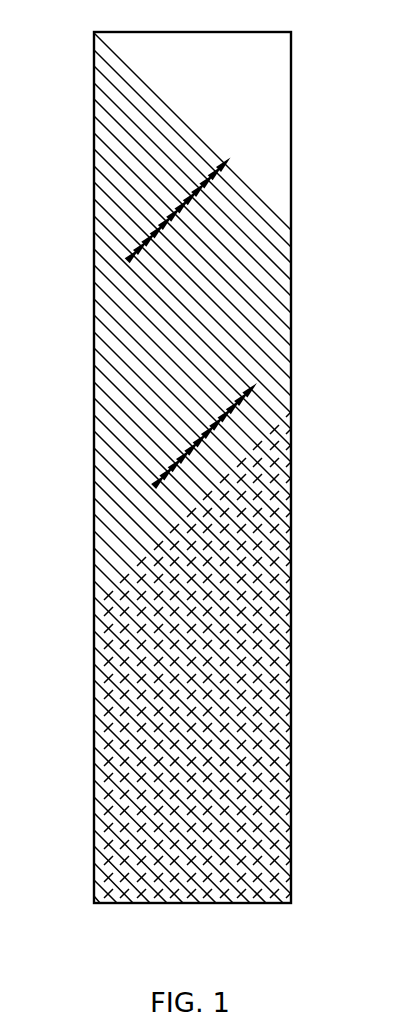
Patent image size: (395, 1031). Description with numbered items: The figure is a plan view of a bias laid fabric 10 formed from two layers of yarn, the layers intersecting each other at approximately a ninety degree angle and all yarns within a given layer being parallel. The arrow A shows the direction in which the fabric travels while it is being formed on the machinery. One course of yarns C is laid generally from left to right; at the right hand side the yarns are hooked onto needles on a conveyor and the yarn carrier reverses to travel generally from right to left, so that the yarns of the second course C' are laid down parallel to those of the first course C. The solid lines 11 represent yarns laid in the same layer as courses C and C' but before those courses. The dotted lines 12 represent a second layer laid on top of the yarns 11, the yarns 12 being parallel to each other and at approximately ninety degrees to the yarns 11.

The bias laid fabric 10 is at (186, 481).
The solid line yarns 11 is at (100, 487).
The dotted line yarns 12 is at (291, 593).
The first course of yarns C is at (58, 124).
The second course of yarns C' is at (59, 334).
The direction of travel arrow A is at (330, 412).